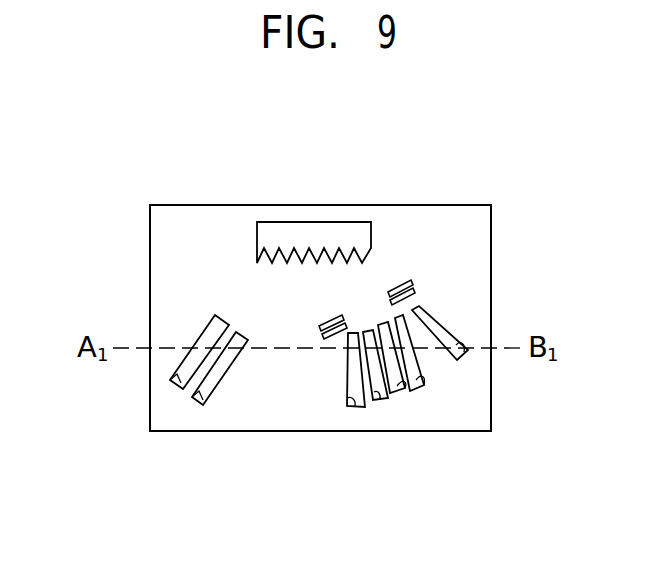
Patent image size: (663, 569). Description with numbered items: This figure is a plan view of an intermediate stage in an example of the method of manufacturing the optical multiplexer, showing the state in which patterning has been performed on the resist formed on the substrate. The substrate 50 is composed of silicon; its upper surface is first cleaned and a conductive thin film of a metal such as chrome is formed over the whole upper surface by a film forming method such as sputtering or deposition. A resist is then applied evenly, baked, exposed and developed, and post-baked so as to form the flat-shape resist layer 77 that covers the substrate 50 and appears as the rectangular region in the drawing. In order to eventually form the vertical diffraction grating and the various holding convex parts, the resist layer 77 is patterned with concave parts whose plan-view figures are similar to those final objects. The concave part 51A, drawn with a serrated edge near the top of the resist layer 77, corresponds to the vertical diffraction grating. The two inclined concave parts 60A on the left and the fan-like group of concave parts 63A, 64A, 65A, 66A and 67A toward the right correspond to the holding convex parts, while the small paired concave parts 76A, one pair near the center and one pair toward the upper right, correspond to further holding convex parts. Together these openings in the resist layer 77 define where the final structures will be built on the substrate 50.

The substrate 50 is at (430, 193).
The resist layer 77 is at (185, 238).
The concave part 51A is at (288, 222).
The concave parts 60A is at (174, 392).
The concave part 63A is at (355, 407).
The concave part 64A is at (380, 402).
The concave part 65A is at (420, 384).
The concave part 66A is at (443, 365).
The concave part 67A is at (458, 344).
The concave parts 76A is at (332, 339).